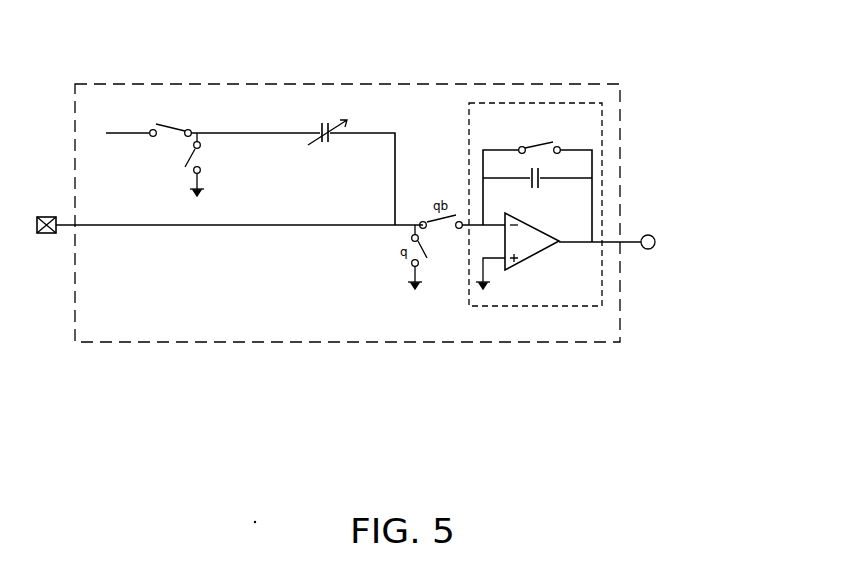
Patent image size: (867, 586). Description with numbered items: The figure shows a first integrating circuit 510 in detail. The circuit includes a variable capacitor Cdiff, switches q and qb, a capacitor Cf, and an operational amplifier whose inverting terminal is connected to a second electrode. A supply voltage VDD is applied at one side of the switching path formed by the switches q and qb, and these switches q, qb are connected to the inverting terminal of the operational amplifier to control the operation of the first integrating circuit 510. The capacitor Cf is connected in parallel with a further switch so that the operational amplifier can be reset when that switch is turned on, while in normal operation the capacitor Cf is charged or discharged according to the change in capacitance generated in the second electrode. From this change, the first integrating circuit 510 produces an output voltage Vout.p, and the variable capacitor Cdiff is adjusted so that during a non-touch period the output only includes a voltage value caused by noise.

The first integrating circuit 510 is at (515, 83).
The operational amplifier is at (558, 306).
The supply voltage + VDD is at (117, 121).
The switch q is at (171, 138).
The switch qb is at (204, 164).
The variable capacitor Cdiff is at (327, 124).
The capacitor Cf is at (533, 190).
The output voltage Vout.p is at (677, 241).